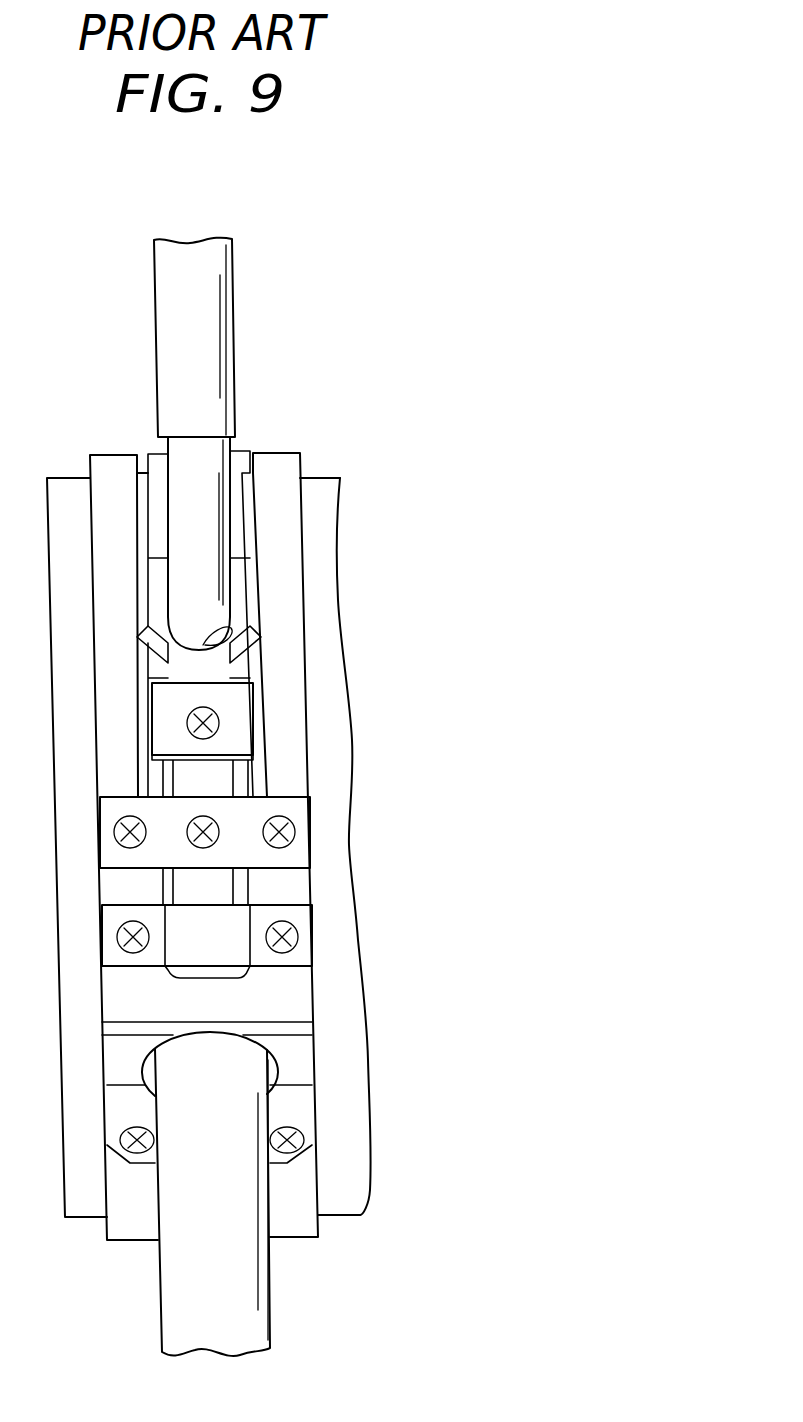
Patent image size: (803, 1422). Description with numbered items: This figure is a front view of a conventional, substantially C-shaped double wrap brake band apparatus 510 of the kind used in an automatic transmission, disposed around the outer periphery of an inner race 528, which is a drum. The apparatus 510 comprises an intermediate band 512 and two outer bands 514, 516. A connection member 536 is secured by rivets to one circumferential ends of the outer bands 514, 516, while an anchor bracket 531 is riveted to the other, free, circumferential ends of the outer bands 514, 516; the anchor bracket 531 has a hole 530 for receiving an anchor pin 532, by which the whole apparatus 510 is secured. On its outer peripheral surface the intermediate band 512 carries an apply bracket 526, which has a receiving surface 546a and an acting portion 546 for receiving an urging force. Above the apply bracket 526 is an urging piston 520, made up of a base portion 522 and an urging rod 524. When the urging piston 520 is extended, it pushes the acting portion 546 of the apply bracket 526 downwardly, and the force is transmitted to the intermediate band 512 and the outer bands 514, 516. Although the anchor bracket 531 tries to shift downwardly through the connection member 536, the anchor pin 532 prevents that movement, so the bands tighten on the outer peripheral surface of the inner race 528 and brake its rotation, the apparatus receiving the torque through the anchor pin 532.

The double wrap brake band apparatus 510 is at (397, 323).
The intermediate band 512 is at (240, 458).
The outer band 514 is at (108, 465).
The outer band 516 is at (293, 465).
The urging piston 520 is at (246, 226).
The base portion 522 is at (219, 292).
The urging rod 524 is at (217, 523).
The apply bracket 526 is at (240, 717).
The inner race 528 is at (342, 852).
The hole 530 is at (276, 1060).
The anchor bracket 531 is at (303, 915).
The anchor pin 532 is at (255, 1288).
The connection member 536 is at (303, 798).
The acting portion 546 is at (213, 662).
The receiving surface 546a is at (205, 645).